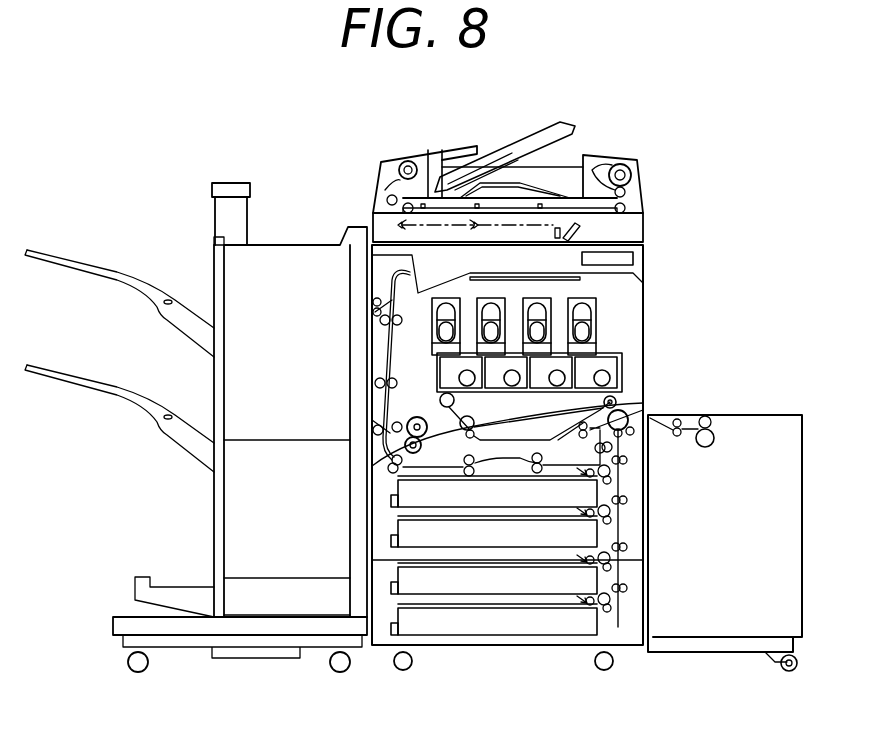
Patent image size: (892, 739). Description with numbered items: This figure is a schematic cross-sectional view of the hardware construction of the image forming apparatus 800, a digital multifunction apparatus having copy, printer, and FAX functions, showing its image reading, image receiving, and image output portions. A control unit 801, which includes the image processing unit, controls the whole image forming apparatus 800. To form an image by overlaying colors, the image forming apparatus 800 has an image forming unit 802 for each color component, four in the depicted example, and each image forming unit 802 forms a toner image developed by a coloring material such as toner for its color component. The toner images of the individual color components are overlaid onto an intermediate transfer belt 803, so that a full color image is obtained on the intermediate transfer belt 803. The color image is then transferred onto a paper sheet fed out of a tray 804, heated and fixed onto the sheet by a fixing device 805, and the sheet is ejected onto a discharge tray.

The image forming apparatus 800 is at (546, 106).
The control unit 801 is at (628, 258).
The image forming unit 802 is at (603, 364).
The intermediate transfer belt 803 is at (643, 404).
The tray 804 is at (493, 490).
The fixing device 805 is at (378, 463).